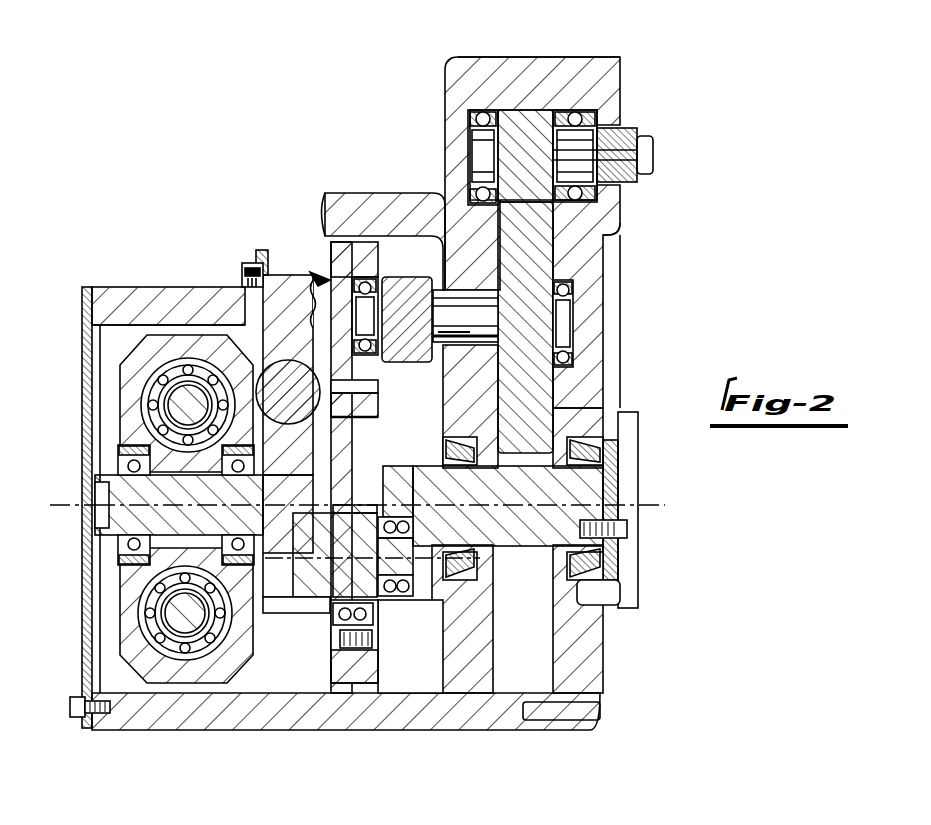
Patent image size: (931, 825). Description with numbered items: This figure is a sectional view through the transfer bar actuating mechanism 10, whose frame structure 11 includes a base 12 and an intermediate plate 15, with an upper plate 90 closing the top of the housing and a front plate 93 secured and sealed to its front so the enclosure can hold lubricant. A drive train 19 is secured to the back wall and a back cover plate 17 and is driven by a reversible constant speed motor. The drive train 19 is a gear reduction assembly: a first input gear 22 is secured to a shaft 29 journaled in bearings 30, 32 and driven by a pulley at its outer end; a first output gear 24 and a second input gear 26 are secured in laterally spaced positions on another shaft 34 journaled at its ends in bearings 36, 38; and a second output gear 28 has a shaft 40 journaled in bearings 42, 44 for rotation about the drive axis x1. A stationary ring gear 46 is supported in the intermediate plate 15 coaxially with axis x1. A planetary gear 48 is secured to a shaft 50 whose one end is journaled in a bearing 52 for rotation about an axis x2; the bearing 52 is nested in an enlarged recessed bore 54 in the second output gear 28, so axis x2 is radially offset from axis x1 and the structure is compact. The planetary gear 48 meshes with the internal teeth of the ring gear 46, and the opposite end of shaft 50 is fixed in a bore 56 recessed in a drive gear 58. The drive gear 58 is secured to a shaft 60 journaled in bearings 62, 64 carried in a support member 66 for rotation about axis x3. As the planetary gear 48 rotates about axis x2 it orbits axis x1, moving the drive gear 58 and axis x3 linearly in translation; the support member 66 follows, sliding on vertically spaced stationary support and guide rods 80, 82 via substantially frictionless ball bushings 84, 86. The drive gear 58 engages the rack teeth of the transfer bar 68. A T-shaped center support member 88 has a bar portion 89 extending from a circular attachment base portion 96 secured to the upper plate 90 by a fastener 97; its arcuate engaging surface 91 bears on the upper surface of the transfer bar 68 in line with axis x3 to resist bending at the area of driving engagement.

The transfer bar actuating mechanism 10 is at (624, 690).
The frame structure 11 is at (522, 708).
The base 12 is at (392, 697).
The intermediate plate 15 is at (350, 668).
The back cover plate 17 is at (578, 72).
The drive train 19 is at (520, 112).
The first input gear 22 is at (620, 60).
The first output gear 24 is at (533, 288).
The second input gear 26 is at (417, 285).
The second output gear 28 is at (548, 415).
The shaft 29 is at (622, 140).
The bearing 30 is at (488, 112).
The bearing 32 is at (620, 230).
The shaft 34 is at (465, 316).
The bearing 36 is at (572, 300).
The bearing 38 is at (363, 273).
The shaft 40 is at (635, 458).
The bearing 42 is at (600, 585).
The bearing 44 is at (470, 588).
The ring gear 46 is at (368, 407).
The planetary gear 48 is at (357, 522).
The shaft 50 is at (318, 642).
The bearing 52 is at (392, 515).
The recessed bore 54 is at (405, 555).
The bore 56 is at (310, 522).
The drive gear 58 is at (258, 662).
The shaft 60 is at (115, 548).
The bearing 62 is at (110, 475).
The bearing 64 is at (130, 573).
The support member 66 is at (157, 352).
The transfer bar 68 is at (210, 300).
The support and guide rod 80 is at (180, 408).
The support and guide rod 82 is at (84, 720).
The ball bushing 84 is at (153, 375).
The ball bushing 86 is at (190, 655).
The center support member 88 is at (307, 273).
The bar portion 89 is at (245, 267).
The upper plate 90 is at (147, 283).
The engaging surface 91 is at (292, 365).
The front plate 93 is at (83, 668).
The circular attachment base portion 96 is at (333, 240).
The fastener 97 is at (263, 265).
The drive axis x1 is at (652, 507).
The planetary gear axis x2 is at (325, 608).
The drive gear axis x3 is at (72, 507).